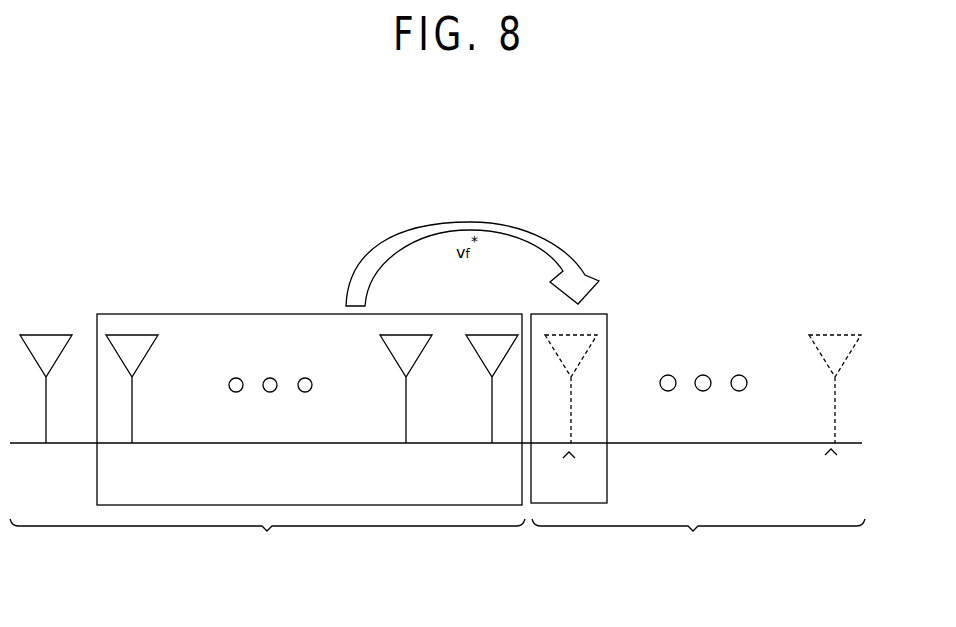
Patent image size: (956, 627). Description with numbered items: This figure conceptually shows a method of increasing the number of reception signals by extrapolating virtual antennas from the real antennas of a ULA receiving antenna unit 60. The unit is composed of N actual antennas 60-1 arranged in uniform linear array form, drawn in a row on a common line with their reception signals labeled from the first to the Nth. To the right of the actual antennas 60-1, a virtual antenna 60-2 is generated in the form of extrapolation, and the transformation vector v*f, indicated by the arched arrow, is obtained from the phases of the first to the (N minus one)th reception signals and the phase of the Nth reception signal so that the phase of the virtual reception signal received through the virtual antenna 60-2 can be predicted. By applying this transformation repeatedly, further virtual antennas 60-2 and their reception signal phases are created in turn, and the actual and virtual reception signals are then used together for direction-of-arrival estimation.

The ULA receiving antenna unit 60 is at (436, 404).
The actual antennas 60-1 is at (267, 438).
The virtual antenna 60-2 is at (698, 455).